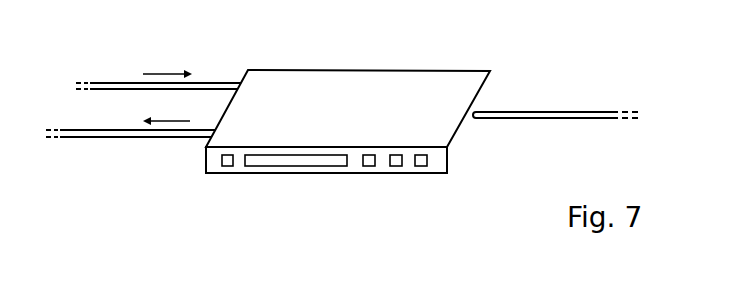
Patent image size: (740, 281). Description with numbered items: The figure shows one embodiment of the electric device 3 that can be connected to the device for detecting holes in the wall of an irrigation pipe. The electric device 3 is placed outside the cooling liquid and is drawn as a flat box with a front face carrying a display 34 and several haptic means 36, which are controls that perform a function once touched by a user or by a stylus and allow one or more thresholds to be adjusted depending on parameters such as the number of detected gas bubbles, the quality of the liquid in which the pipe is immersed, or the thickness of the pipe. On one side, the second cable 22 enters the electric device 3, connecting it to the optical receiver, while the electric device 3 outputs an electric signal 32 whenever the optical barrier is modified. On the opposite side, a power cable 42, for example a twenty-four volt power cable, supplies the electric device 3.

The electric device 3 is at (432, 75).
The second cable 22 is at (108, 83).
The electric signal 32 is at (108, 136).
The display 34 is at (303, 160).
The haptic means 36 is at (222, 167).
The power cable 42 is at (557, 113).